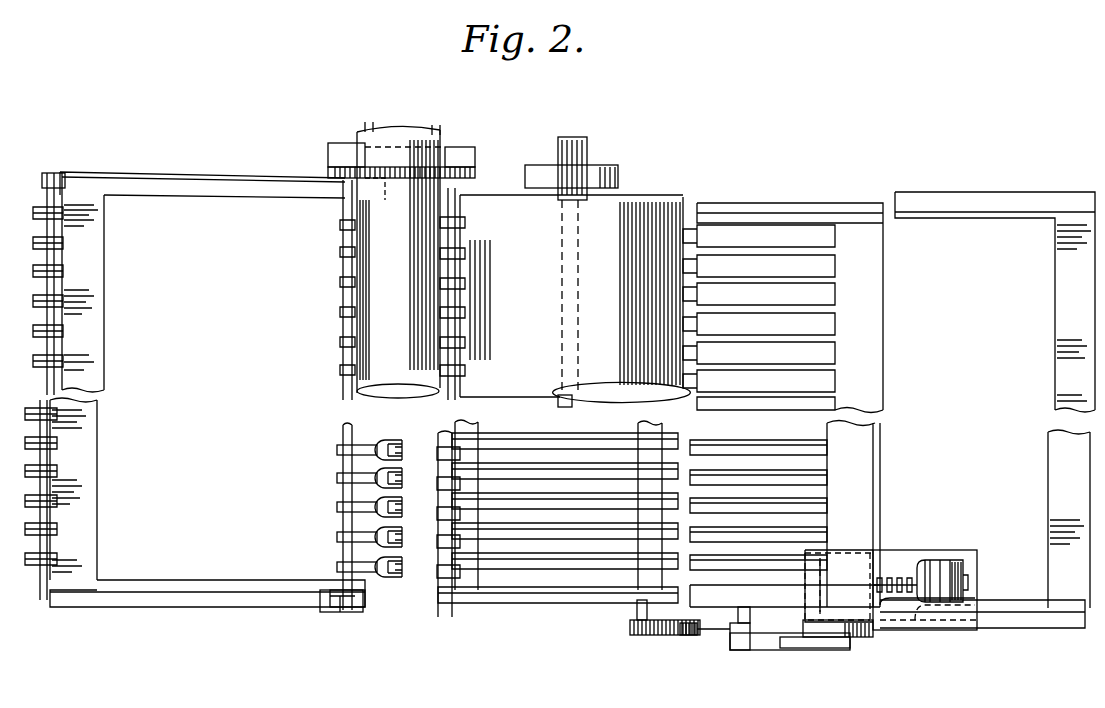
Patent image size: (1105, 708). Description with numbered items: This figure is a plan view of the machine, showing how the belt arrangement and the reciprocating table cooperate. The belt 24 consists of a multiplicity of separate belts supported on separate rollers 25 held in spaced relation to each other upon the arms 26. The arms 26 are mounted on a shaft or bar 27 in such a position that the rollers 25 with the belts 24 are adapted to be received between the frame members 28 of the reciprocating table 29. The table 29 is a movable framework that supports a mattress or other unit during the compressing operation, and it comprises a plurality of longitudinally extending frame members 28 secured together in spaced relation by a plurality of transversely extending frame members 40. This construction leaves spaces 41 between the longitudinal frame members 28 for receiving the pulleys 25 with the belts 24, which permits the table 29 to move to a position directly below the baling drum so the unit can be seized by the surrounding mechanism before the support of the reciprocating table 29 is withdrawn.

The belt 24 is at (385, 545).
The roller 25 is at (387, 540).
The arm 26 is at (358, 572).
The shaft or bar 27 is at (340, 592).
The frame member 28 is at (525, 528).
The reciprocating table 29 is at (593, 592).
The transversely extending frame member 40 is at (467, 573).
The space 41 is at (553, 577).